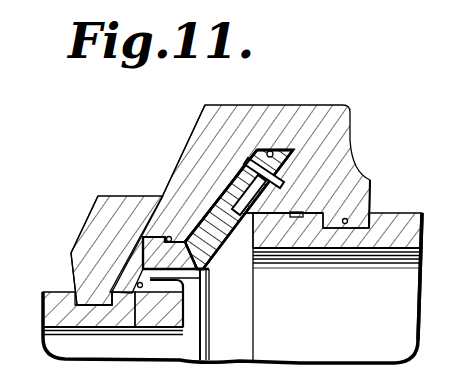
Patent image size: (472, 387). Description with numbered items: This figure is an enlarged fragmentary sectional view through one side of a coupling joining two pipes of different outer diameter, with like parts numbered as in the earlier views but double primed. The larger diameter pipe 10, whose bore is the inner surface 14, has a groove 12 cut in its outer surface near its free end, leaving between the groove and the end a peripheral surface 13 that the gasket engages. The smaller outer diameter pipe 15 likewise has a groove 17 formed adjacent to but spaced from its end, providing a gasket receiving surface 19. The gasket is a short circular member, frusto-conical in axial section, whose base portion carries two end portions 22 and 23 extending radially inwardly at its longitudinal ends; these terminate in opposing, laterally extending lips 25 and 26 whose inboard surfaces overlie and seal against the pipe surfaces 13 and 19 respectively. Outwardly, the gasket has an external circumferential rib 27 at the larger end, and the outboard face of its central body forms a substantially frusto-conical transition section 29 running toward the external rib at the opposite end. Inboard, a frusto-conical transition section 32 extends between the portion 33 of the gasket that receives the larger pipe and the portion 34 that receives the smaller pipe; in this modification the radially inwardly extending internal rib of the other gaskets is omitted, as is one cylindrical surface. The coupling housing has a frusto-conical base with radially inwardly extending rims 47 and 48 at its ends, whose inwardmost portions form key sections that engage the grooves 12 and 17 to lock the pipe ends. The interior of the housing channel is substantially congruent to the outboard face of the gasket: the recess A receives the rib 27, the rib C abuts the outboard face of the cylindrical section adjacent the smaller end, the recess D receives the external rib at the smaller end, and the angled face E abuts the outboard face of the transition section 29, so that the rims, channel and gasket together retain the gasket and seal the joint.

The larger diameter pipe 10 is at (426, 231).
The groove 12 is at (348, 222).
The surface 13 is at (291, 233).
The inner surface 14 is at (422, 265).
The smaller outer diameter pipe 15 is at (50, 291).
The groove 17 is at (96, 297).
The gasket receiving surface 19 is at (136, 328).
The end portion 22 is at (297, 202).
The end portion 23 is at (135, 262).
The lip 25 is at (263, 233).
The lip 26 is at (182, 328).
The external circumferential rib 27 is at (297, 176).
The transition section 29 is at (226, 194).
The inboard transition section 32 is at (243, 337).
The gasket portion 33 is at (280, 186).
The gasket portion 34 is at (176, 279).
The rim 47 is at (373, 196).
The rim 48 is at (100, 243).
The recess A is at (270, 158).
The rib C is at (176, 195).
The recess D is at (138, 243).
The angled face E is at (250, 158).